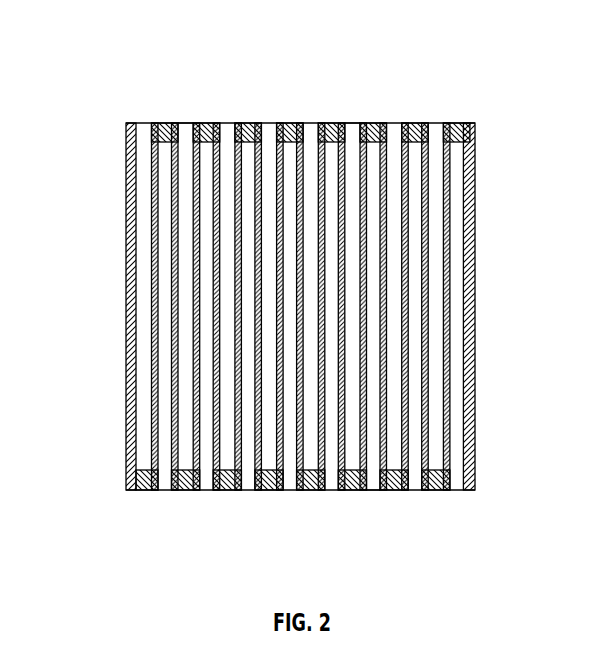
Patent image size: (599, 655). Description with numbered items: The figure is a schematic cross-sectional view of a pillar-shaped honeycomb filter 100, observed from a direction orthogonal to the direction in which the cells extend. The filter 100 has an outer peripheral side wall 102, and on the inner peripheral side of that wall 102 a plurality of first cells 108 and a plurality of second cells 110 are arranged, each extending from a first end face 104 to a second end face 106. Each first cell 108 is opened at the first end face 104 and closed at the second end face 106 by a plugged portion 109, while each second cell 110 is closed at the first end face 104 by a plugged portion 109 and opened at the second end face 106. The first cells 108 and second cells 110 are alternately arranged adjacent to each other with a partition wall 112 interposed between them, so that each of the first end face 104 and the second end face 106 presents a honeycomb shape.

The pillar-shaped honeycomb filter 100 is at (276, 86).
The outer peripheral side wall 102 is at (127, 160).
The first end face 104 is at (128, 490).
The second end face 106 is at (473, 123).
The first cell 108 is at (372, 481).
The plugged portion 109 is at (417, 123).
The second cell 110 is at (188, 122).
The partition wall 112 is at (152, 260).